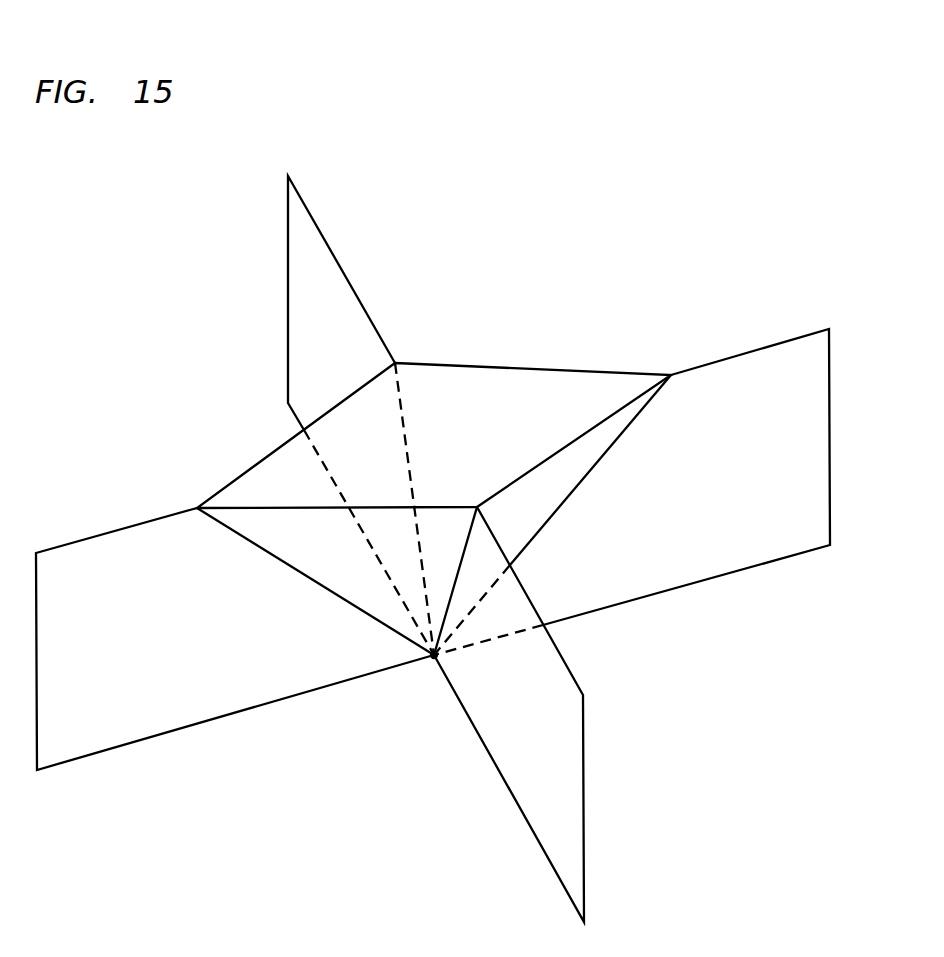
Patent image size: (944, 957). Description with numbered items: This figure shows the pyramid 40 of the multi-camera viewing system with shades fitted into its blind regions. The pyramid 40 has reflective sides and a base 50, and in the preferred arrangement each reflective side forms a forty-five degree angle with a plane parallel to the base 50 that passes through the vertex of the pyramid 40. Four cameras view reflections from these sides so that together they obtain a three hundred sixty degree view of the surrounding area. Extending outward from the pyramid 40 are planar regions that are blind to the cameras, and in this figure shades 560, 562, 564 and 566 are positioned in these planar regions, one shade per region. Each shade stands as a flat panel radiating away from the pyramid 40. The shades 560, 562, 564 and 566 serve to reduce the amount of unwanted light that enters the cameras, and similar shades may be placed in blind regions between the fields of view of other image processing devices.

The pyramid 40 is at (528, 367).
The base 50 is at (580, 398).
The shade 560 is at (310, 209).
The shade 562 is at (107, 530).
The shade 564 is at (568, 668).
The shade 566 is at (768, 347).